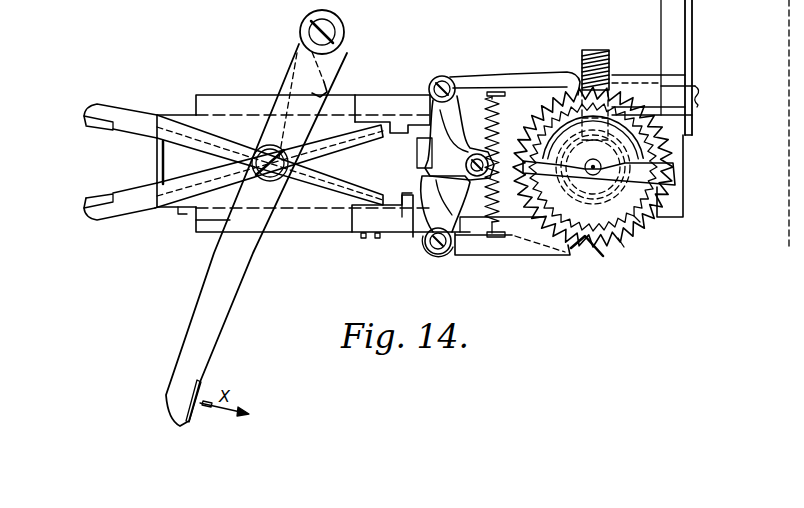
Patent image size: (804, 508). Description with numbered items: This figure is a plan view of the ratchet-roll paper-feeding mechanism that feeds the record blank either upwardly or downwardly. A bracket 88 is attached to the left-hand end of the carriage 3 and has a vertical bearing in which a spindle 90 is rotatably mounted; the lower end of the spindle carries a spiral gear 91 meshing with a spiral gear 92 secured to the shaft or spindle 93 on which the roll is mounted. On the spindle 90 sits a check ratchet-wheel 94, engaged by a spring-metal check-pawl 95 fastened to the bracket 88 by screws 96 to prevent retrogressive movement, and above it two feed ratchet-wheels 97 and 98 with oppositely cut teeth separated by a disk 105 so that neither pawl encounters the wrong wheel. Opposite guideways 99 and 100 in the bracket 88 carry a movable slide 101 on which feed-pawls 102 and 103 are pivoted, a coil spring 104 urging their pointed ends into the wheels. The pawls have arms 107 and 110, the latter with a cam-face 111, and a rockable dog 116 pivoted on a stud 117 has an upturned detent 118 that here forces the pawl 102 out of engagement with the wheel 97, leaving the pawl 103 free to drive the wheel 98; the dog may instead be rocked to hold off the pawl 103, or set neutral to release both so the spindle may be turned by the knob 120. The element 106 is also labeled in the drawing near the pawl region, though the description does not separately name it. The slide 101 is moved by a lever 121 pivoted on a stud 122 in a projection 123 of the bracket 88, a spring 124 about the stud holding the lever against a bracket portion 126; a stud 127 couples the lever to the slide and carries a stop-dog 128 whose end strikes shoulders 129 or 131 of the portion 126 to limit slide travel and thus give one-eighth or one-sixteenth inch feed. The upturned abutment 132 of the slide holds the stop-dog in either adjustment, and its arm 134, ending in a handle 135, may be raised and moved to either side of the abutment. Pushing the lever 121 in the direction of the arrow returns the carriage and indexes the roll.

The carriage 3 is at (664, 18).
The bracket 88 is at (680, 211).
The spindle 90 is at (584, 158).
The spiral gear 91 is at (600, 193).
The spiral gear 92 is at (605, 47).
The shaft or spindle 93 is at (697, 86).
The check ratchet-wheel 94 is at (620, 244).
The check-pawl or dog 95 is at (573, 254).
The screws 96 is at (368, 239).
The feed ratchet-wheel 97 is at (655, 155).
The feed ratchet-wheel 98 is at (640, 220).
The guideway 99 is at (250, 116).
The guideway 100 is at (312, 216).
The slide 101 is at (180, 213).
The feed-pawl 102 is at (538, 78).
The feed-pawl 103 is at (526, 252).
The coil spring 104 is at (503, 115).
The disk 105 is at (652, 178).
The link 106 is at (498, 118).
The arm 107 is at (492, 97).
The arm 110 is at (436, 210).
The cam-face 111 is at (422, 180).
The rockable dog 116 is at (494, 213).
The stud 117 is at (471, 164).
The detent 118 is at (420, 155).
The knob 120 is at (617, 128).
The lever 121 is at (237, 267).
The stud 122 is at (338, 32).
The projection 123 is at (348, 60).
The spring 124 is at (340, 50).
The portion 126 is at (213, 228).
The stud 127 is at (287, 172).
The stop-dog 128 is at (355, 141).
The shoulder 129 is at (413, 200).
The shoulder 131 is at (403, 132).
The abutment 132 is at (157, 164).
The stop-dog arm 134 is at (124, 131).
The handle 135 is at (88, 126).